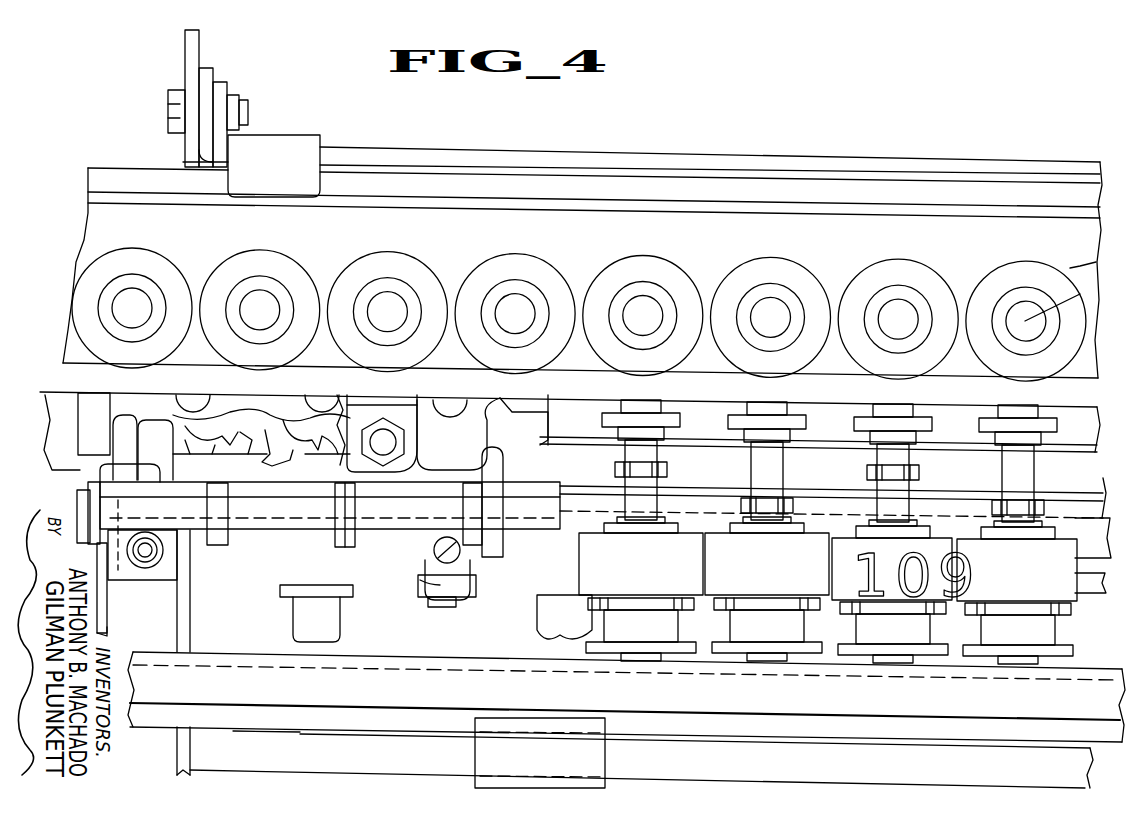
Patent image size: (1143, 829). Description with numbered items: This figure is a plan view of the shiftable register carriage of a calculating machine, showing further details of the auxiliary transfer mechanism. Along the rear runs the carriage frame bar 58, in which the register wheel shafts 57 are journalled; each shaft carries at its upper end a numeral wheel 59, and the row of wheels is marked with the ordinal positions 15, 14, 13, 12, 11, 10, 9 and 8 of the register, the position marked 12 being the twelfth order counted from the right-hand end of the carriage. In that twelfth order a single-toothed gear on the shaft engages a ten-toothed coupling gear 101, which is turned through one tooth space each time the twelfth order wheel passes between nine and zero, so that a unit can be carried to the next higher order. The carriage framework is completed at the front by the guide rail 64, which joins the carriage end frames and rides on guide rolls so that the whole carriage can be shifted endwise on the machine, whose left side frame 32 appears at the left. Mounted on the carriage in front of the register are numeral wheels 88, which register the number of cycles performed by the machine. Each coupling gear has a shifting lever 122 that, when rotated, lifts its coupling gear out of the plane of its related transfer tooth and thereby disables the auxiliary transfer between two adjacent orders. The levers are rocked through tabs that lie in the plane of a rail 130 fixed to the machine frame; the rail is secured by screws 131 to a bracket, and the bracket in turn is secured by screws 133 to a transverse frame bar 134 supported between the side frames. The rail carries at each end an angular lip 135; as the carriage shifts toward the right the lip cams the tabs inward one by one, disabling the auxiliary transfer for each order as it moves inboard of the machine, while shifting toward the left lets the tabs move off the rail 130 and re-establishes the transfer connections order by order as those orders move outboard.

The carriage frame bar 58 is at (84, 215).
The indicating wheel 15 is at (132, 295).
The indicating wheel 14 is at (260, 297).
The indicating wheel 13 is at (387, 299).
The indicating wheel 12 is at (515, 301).
The indicating wheel 11 is at (643, 303).
The number wheel 10 is at (771, 304).
The number wheel 9 is at (898, 306).
The number wheel 8 is at (1026, 308).
The numeral wheel 59 is at (1096, 270).
The register wheel shaft 57 is at (1080, 294).
The coupling gear 101 is at (498, 412).
The shifting lever 122 is at (84, 481).
The rail 130 is at (1062, 508).
The left side frame 32 is at (176, 607).
The angular lip 135 is at (253, 507).
The screws 131 is at (420, 585).
The screws 133 is at (442, 598).
The transverse frame bar 134 is at (532, 578).
The numeral wheel 88 is at (1062, 593).
The guide rail 64 is at (1095, 703).